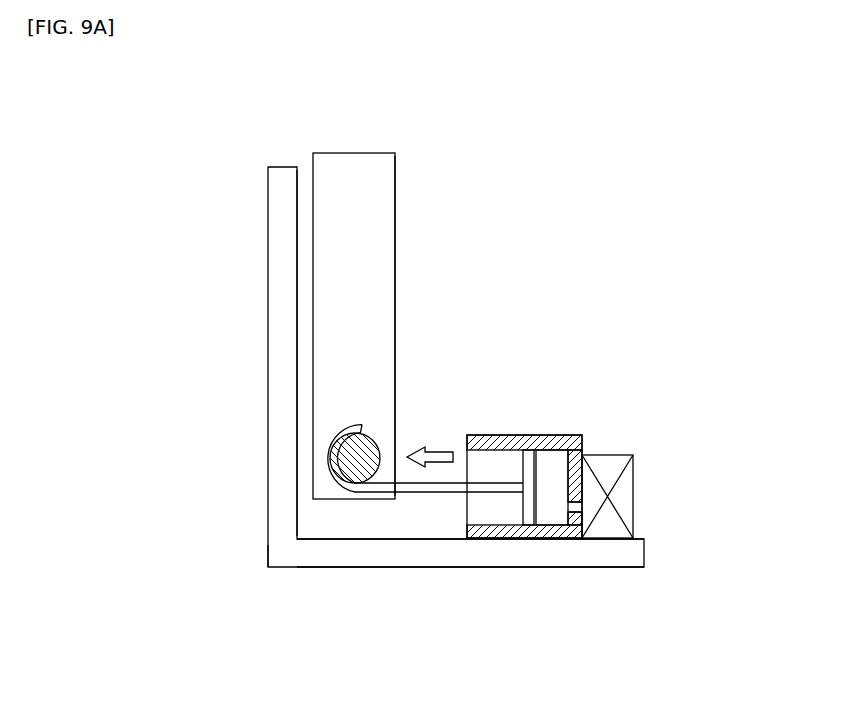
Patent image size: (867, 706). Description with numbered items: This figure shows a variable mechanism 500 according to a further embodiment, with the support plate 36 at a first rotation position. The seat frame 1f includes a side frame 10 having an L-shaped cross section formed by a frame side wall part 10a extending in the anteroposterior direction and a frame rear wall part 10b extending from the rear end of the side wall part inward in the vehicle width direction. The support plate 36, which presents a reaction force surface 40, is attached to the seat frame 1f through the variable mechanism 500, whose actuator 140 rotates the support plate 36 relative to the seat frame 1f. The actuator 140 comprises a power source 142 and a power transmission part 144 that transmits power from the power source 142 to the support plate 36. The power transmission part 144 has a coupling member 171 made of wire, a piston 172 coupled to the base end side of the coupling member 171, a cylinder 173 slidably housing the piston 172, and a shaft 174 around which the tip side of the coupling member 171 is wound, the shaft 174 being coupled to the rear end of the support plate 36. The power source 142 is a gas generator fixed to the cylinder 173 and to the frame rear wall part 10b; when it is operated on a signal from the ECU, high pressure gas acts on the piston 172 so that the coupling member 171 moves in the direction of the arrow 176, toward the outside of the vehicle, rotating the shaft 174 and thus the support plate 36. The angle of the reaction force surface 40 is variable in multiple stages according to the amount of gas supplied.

The variable mechanism 500 is at (462, 121).
The side frame 10 is at (262, 213).
The frame side wall part 10a is at (290, 335).
The frame rear wall part 10b is at (600, 552).
The seat frame 1f is at (262, 552).
The support plate 36 is at (402, 207).
The reaction force surface 40 is at (397, 290).
The actuator 140 is at (664, 485).
The power source 142 is at (622, 497).
The power transmission part 144 is at (444, 546).
The coupling member 171 is at (413, 488).
The piston 172 is at (527, 503).
The cylinder 173 is at (529, 538).
The shaft 174 is at (350, 486).
The arrow 176 is at (445, 447).